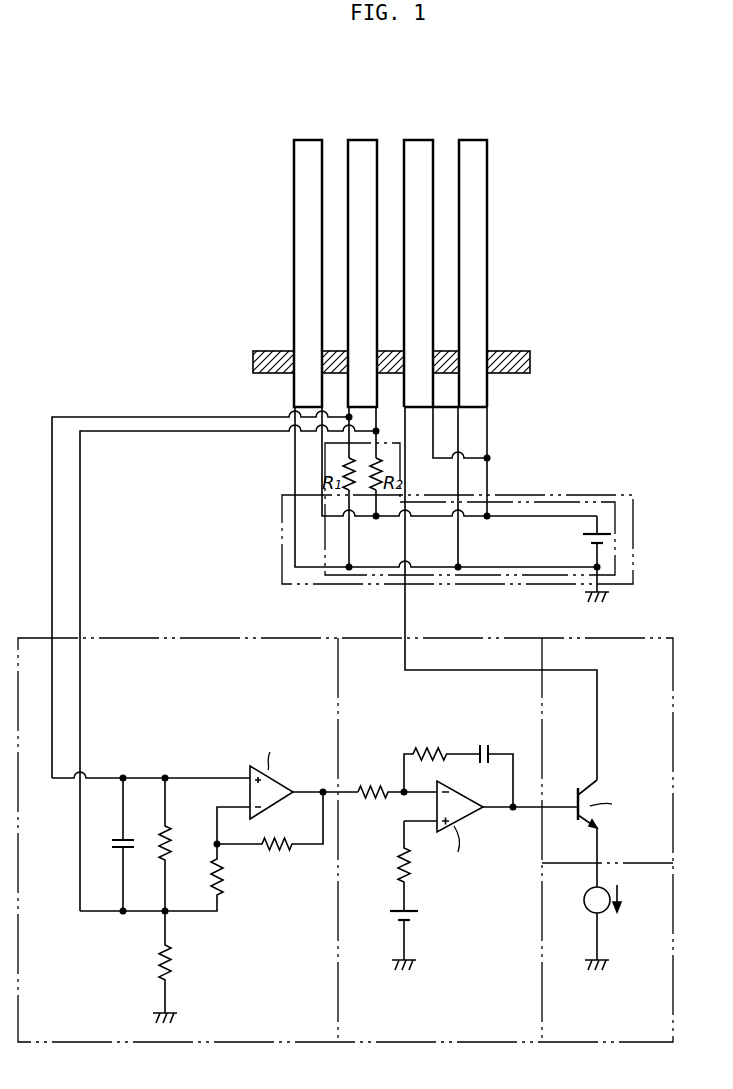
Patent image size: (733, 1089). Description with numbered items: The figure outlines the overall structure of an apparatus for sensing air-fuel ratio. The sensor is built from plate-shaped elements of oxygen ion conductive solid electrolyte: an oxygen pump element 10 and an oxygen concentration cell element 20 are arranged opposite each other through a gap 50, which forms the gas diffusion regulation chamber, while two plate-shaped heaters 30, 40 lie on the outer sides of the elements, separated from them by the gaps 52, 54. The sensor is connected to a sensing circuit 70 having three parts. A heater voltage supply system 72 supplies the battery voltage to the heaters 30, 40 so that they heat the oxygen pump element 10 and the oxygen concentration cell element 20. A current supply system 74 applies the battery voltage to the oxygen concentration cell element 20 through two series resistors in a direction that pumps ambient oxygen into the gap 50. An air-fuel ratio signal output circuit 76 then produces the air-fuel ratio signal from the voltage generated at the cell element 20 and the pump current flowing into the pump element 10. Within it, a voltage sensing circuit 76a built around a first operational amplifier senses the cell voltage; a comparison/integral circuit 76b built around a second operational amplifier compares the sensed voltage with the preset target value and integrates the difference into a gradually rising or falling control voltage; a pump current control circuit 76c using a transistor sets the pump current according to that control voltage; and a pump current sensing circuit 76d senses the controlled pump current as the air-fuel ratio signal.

The oxygen pump element 10 is at (419, 143).
The oxygen concentration cell element 20 is at (362, 143).
The heater 30 is at (475, 143).
The heater 40 is at (308, 143).
The gap 50 is at (390, 170).
The gap 52 is at (447, 178).
The gap 54 is at (335, 168).
The sensing circuit 70 is at (712, 570).
The heater voltage supply system 72 is at (612, 495).
The current supply system 74 is at (563, 502).
The air-fuel ratio signal output circuit 76 is at (726, 799).
The voltage sensing circuit 76a is at (188, 652).
The comparison/integral circuit 76b is at (425, 637).
The pump current control circuit 76c is at (660, 748).
The pump current sensing circuit 76d is at (655, 928).